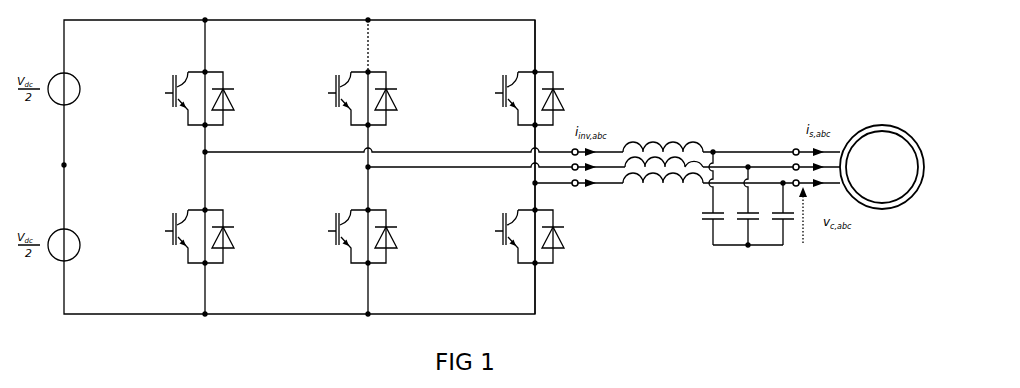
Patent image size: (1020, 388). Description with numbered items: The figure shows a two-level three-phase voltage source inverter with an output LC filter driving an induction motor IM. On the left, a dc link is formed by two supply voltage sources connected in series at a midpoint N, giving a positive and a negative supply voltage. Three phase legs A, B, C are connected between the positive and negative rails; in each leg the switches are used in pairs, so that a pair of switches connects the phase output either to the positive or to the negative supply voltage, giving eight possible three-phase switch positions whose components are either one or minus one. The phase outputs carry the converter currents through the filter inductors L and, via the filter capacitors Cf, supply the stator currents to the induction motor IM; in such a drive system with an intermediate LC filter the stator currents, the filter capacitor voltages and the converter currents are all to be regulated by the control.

The DC-link neutral point N is at (54, 166).
The inverter phase leg A is at (199, 167).
The inverter phase leg B is at (362, 167).
The inverter phase leg C is at (529, 167).
The filter inductor L is at (663, 150).
The filter capacitor Cf is at (737, 198).
The induction motor IM is at (882, 167).